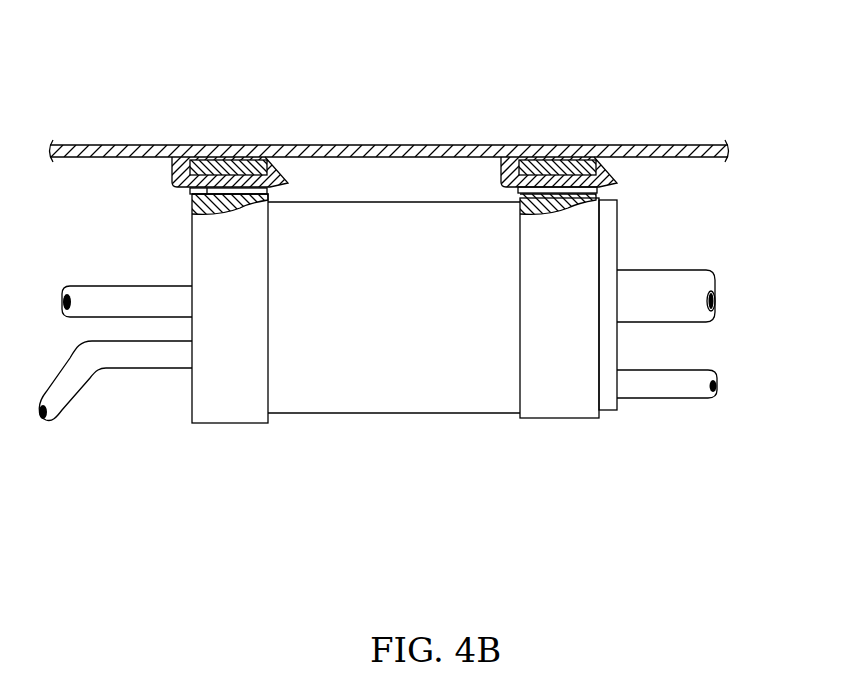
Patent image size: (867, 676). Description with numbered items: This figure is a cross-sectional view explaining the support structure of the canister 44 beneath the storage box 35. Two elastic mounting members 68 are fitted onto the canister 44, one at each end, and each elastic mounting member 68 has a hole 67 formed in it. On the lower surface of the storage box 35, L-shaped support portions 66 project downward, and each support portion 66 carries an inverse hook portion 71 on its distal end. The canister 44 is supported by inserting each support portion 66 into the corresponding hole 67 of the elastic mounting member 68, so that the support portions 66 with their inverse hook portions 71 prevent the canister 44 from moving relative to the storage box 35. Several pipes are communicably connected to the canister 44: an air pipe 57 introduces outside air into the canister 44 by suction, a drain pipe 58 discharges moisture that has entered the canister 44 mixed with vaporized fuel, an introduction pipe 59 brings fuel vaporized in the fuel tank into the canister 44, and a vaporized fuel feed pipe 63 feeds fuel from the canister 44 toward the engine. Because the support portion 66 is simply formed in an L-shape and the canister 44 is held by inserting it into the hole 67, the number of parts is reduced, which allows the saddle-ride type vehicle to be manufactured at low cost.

The storage box 35 is at (386, 139).
The canister 44 is at (408, 418).
The air pipe 57 is at (700, 268).
The drain pipe 58 is at (695, 401).
The introduction pipe 59 is at (82, 285).
The vaporized fuel feed pipe 63 is at (88, 401).
The support portion 66 is at (171, 174).
The hole 67 is at (197, 191).
The elastic mounting member 68 is at (235, 424).
The inverse hook portion 71 is at (289, 178).